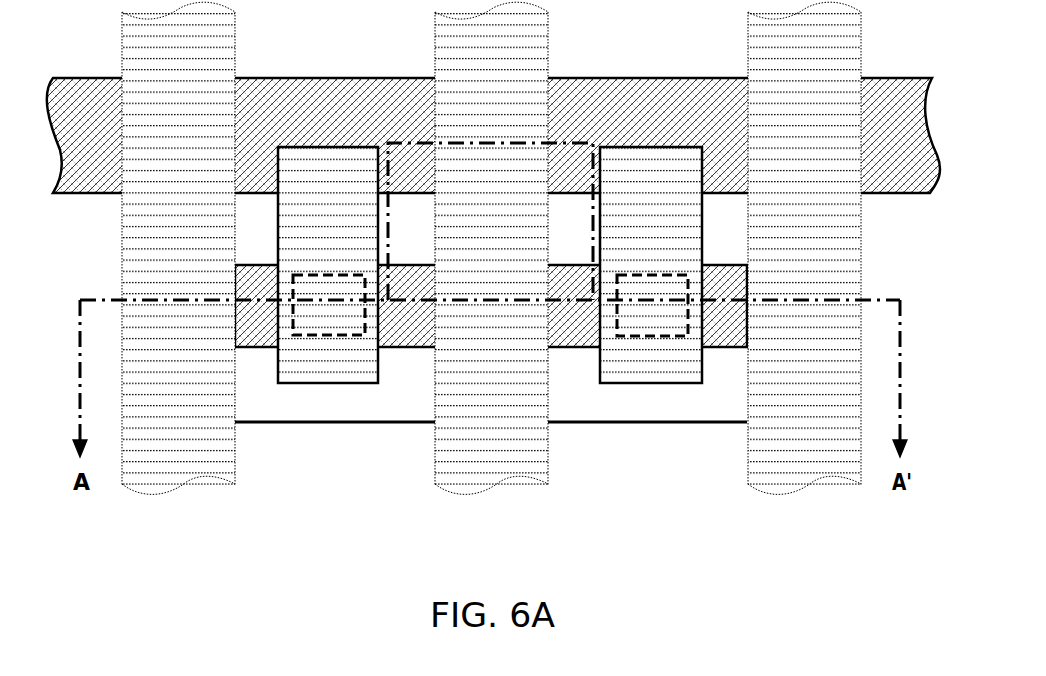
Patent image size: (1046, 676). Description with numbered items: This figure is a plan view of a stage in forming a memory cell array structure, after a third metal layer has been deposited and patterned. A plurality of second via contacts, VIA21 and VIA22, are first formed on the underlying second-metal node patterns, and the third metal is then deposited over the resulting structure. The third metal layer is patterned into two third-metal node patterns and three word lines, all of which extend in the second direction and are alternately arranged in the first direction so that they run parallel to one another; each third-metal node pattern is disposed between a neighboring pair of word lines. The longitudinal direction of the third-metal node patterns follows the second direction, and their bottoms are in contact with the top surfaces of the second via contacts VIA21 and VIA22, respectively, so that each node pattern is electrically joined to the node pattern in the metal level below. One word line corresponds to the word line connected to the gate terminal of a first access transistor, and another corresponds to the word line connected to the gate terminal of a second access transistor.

The second via contact VIA21 is at (289, 316).
The second via contact VIA22 is at (652, 340).